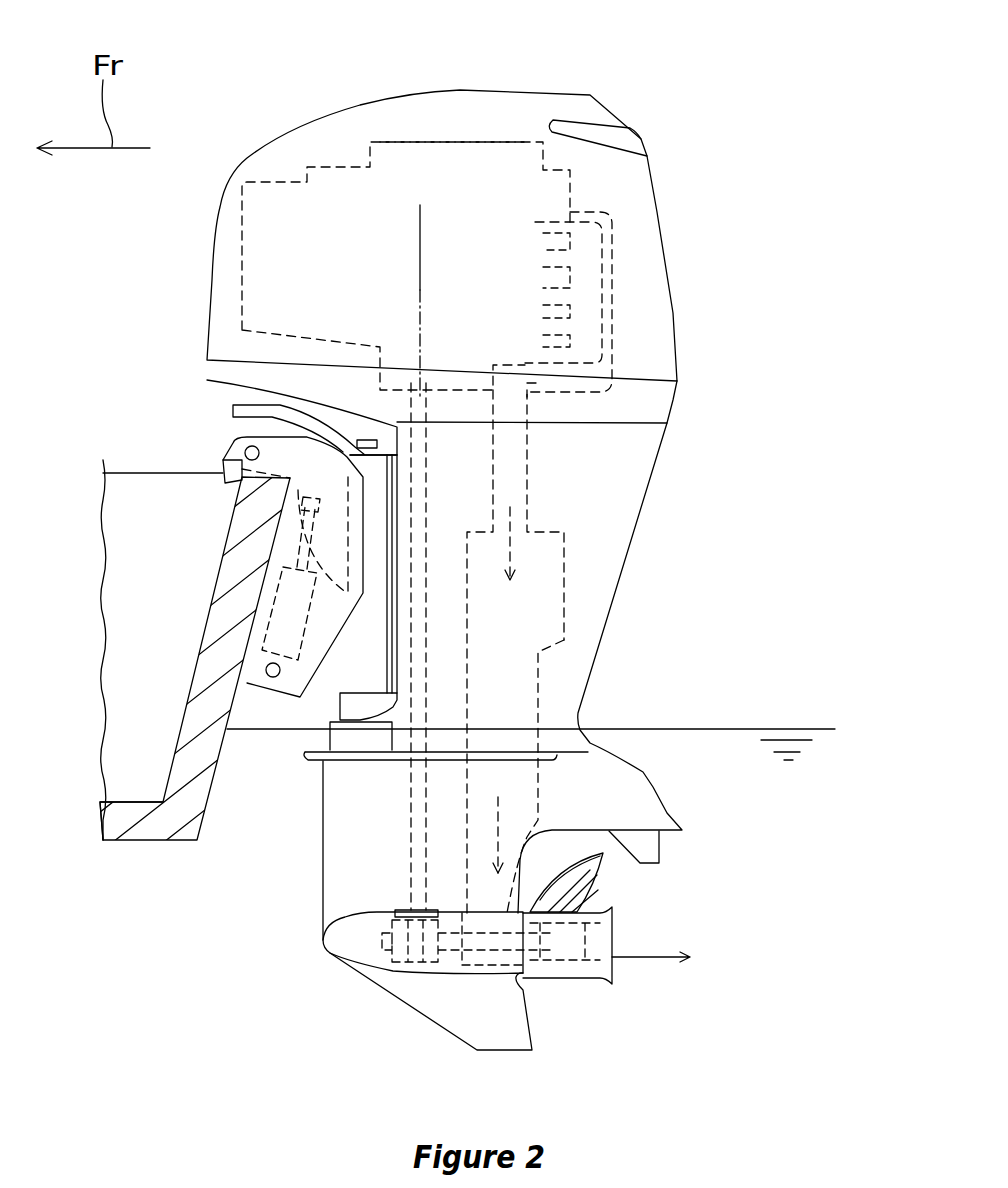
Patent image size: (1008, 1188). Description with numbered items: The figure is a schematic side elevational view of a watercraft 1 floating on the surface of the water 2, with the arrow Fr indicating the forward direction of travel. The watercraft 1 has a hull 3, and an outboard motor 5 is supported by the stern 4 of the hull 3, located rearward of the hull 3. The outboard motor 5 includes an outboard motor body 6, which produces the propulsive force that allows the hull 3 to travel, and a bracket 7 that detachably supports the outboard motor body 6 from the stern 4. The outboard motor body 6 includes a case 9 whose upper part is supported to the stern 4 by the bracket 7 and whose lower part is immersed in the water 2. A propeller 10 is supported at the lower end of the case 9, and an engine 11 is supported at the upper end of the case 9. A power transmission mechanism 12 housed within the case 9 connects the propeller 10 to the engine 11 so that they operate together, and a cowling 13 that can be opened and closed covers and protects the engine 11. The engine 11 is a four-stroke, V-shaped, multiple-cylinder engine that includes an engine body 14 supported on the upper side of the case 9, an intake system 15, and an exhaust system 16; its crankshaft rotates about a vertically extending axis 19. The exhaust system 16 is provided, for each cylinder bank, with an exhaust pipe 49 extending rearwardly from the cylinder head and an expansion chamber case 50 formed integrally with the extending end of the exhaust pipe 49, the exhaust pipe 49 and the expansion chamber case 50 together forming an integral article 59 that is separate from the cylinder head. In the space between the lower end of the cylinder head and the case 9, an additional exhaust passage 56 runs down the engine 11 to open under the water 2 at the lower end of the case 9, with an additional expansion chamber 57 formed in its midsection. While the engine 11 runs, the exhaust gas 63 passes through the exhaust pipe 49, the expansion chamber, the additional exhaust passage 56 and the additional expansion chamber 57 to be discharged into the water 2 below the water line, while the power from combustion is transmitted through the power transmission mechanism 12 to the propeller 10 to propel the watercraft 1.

The watercraft 1 is at (736, 97).
The water 2 is at (806, 729).
The hull 3 is at (143, 853).
The stern 4 is at (223, 627).
The outboard motor 5 is at (728, 205).
The outboard motor body 6 is at (655, 498).
The bracket 7 is at (273, 447).
The case 9 is at (603, 573).
The propeller 10 is at (600, 883).
The engine 11 is at (432, 128).
The power transmission mechanism 12 is at (410, 843).
The cowling 13 is at (472, 118).
The engine body 14 is at (518, 142).
The intake system 15 is at (240, 245).
The exhaust system 16 is at (612, 277).
The axis 19 is at (420, 247).
The exhaust pipe 49 is at (700, 304).
The expansion chamber case 50 is at (700, 304).
The additional exhaust passage 56 is at (510, 462).
The additional expansion chamber 57 is at (550, 607).
The integral article 59 is at (610, 320).
The exhaust gas 63 is at (647, 958).